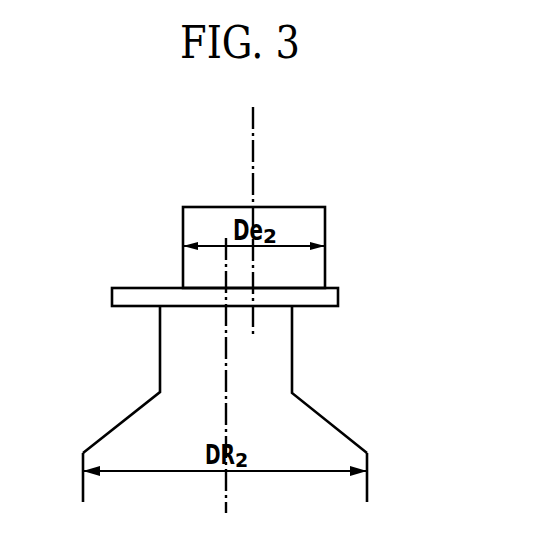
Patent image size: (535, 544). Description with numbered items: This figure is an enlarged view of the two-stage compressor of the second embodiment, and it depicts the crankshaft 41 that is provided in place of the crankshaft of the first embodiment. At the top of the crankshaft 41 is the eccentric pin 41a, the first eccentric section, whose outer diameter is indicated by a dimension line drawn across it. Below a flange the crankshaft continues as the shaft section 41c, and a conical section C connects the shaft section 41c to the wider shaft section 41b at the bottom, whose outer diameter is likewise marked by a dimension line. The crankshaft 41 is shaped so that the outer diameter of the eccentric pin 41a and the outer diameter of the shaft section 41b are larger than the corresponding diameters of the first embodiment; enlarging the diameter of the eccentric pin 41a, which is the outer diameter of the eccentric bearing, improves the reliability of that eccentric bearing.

The crankshaft 41 is at (256, 321).
The eccentric pin 41a is at (308, 217).
The shaft section 41b is at (352, 491).
The shaft section 41c is at (282, 357).
The conical section C is at (313, 437).